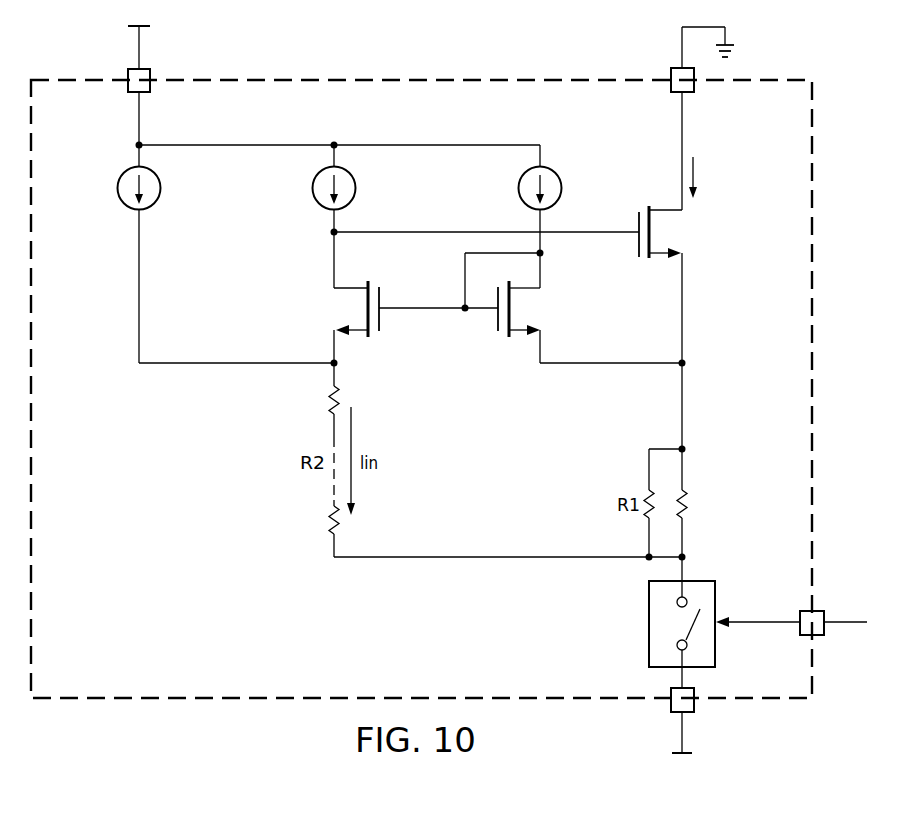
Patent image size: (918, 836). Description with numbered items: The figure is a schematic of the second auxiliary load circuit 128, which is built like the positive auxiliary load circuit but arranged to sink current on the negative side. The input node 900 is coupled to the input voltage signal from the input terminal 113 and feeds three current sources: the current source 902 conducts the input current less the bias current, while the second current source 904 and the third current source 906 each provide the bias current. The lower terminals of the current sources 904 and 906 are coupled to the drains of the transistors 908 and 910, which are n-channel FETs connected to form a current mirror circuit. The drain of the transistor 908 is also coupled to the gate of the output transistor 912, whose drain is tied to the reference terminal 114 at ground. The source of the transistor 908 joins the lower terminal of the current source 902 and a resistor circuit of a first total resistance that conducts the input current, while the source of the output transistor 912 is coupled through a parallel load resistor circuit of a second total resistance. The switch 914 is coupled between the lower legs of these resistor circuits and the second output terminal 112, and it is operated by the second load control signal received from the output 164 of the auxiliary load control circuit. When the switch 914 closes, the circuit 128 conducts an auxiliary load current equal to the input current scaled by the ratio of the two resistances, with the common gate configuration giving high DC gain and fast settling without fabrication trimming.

The second output terminal 112 is at (683, 730).
The input terminal 113 is at (137, 48).
The reference terminal 114 is at (680, 48).
The second auxiliary load circuit 128 is at (356, 74).
The output of the auxiliary load control circuit 164 is at (843, 622).
The input node 900 is at (137, 117).
The current source 902 is at (117, 190).
The second current source 904 is at (312, 190).
The third current source 906 is at (518, 190).
The transistor 908 is at (381, 297).
The transistor 910 is at (496, 322).
The output transistor 912 is at (637, 248).
The switch 914 is at (648, 633).